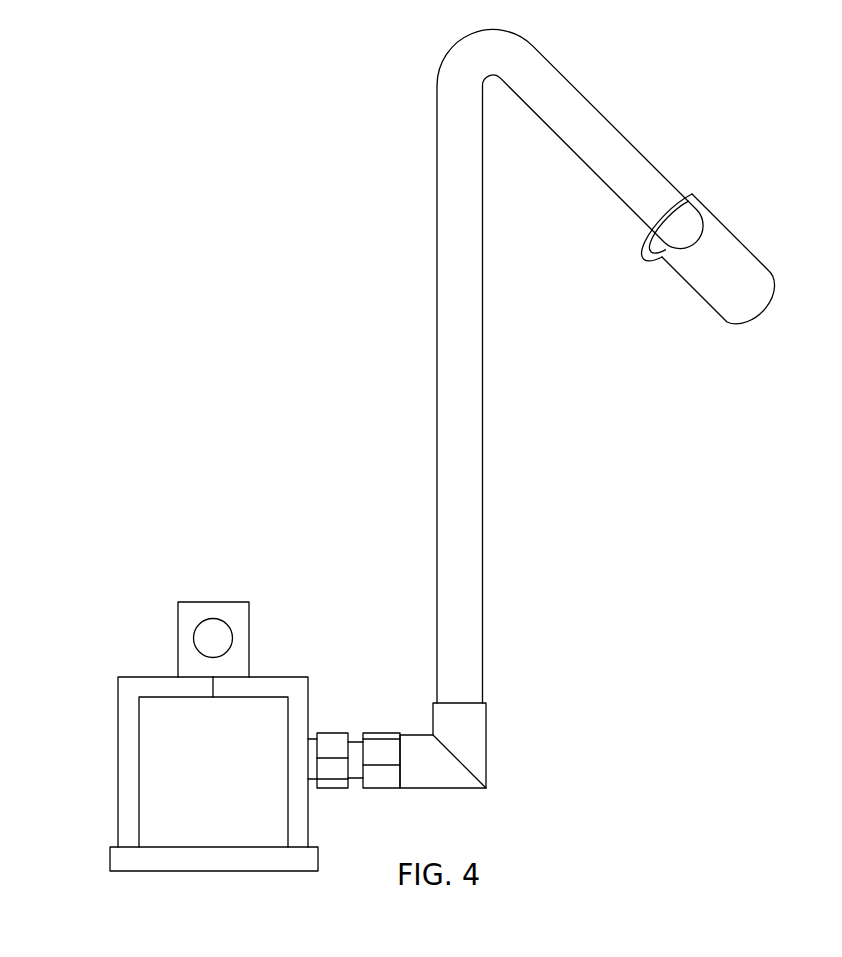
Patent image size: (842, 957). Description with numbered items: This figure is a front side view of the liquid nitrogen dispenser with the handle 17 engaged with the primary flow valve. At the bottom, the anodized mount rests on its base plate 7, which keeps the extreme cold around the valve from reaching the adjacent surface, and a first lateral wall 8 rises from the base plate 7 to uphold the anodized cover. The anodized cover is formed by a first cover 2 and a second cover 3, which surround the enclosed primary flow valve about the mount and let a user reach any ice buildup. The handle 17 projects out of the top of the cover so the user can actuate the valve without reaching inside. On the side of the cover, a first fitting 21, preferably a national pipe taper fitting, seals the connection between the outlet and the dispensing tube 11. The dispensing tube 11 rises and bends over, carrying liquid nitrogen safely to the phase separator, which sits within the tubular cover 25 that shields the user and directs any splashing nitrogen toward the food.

The first cover 2 is at (131, 688).
The second cover 3 is at (296, 688).
The base plate 7 is at (112, 857).
The first lateral wall 8 is at (224, 781).
The dispensing tube 11 is at (448, 407).
The handle 17 is at (213, 611).
The first fitting 21 is at (343, 785).
The tubular cover 25 is at (738, 256).